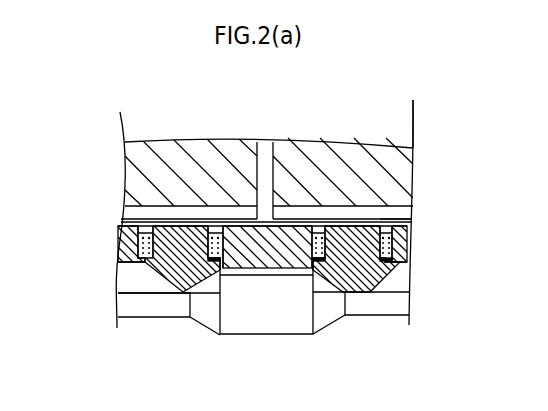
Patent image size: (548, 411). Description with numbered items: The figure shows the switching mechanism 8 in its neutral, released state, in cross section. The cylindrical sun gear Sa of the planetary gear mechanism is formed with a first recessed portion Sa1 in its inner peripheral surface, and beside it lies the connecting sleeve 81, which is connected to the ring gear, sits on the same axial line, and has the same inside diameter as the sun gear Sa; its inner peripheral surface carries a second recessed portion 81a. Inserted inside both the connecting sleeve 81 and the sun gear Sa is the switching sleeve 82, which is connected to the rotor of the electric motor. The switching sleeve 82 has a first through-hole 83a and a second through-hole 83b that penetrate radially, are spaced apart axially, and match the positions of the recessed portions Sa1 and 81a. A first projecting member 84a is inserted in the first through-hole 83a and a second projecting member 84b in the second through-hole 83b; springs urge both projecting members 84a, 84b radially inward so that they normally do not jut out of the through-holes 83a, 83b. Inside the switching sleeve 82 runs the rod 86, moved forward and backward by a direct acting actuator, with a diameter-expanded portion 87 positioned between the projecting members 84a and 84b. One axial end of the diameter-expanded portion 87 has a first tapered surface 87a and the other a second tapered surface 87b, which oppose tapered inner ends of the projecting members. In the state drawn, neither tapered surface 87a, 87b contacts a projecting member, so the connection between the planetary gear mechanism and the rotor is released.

The switching mechanism 8 is at (134, 102).
The connecting sleeve 81 is at (206, 150).
The second recessed portion 81a is at (133, 213).
The sun gear Sa is at (342, 162).
The first recessed portion Sa1 is at (397, 210).
The switching sleeve 82 is at (125, 242).
The first through-hole 83a is at (408, 247).
The second through-hole 83b is at (118, 255).
The first projecting member 84a is at (373, 285).
The second projecting member 84b is at (150, 280).
The rod 86 is at (167, 310).
The diameter-expanded portion 87 is at (287, 321).
The first tapered surface 87a is at (330, 315).
The second tapered surface 87b is at (205, 317).